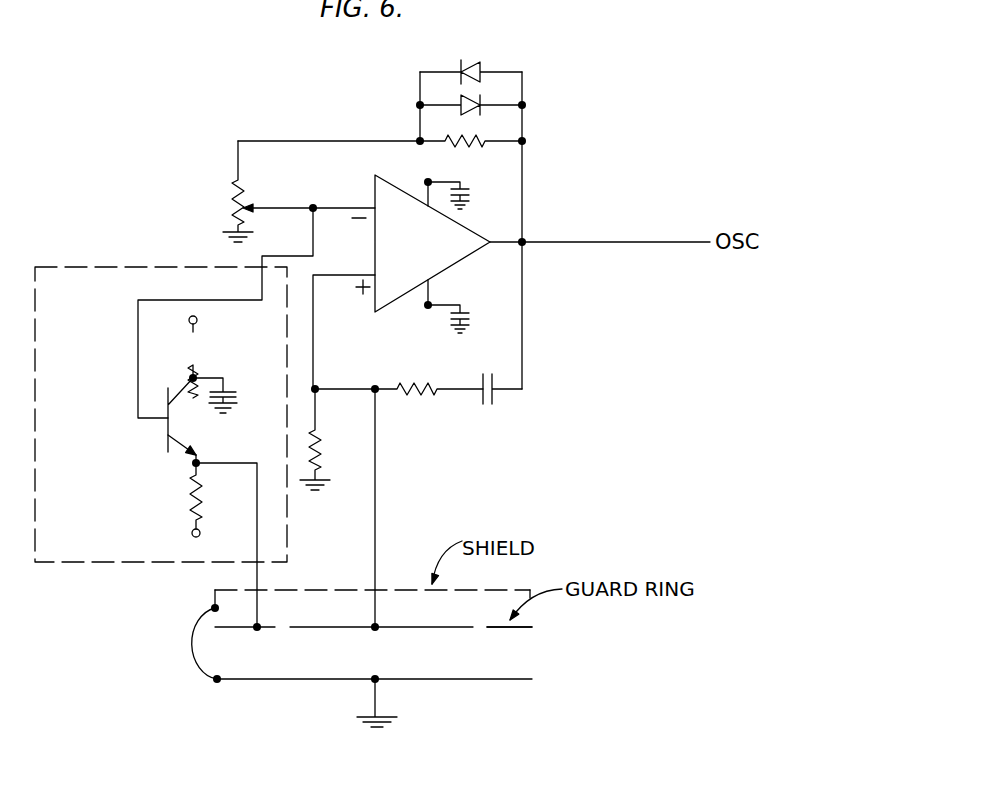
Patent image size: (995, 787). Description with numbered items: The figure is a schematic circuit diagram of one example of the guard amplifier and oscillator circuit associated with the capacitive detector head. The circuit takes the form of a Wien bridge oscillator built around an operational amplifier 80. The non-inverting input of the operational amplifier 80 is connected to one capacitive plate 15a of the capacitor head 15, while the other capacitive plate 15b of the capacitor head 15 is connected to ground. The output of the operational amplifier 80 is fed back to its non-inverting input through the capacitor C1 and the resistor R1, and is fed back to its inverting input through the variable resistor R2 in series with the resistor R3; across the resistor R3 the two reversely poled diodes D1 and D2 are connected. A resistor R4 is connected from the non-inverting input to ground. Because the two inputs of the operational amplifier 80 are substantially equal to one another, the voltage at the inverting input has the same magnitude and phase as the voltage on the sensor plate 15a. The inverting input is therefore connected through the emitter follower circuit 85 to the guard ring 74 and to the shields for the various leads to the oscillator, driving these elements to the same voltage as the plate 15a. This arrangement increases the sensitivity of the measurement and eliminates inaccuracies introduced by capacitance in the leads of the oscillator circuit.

The diode D1 is at (467, 63).
The diode D2 is at (470, 110).
The resistor R3 is at (462, 147).
The variable resistor R2 is at (244, 198).
The resistor R1 is at (407, 395).
The capacitor C1 is at (489, 371).
The resistor R4 is at (323, 448).
The operational amplifier 80 is at (397, 300).
The emitter follower circuit 85 is at (168, 440).
The capacitive plate 15a is at (428, 627).
The capacitive plate 15b is at (277, 683).
The capacitor head 15 is at (468, 682).
The guard ring 74 is at (515, 630).